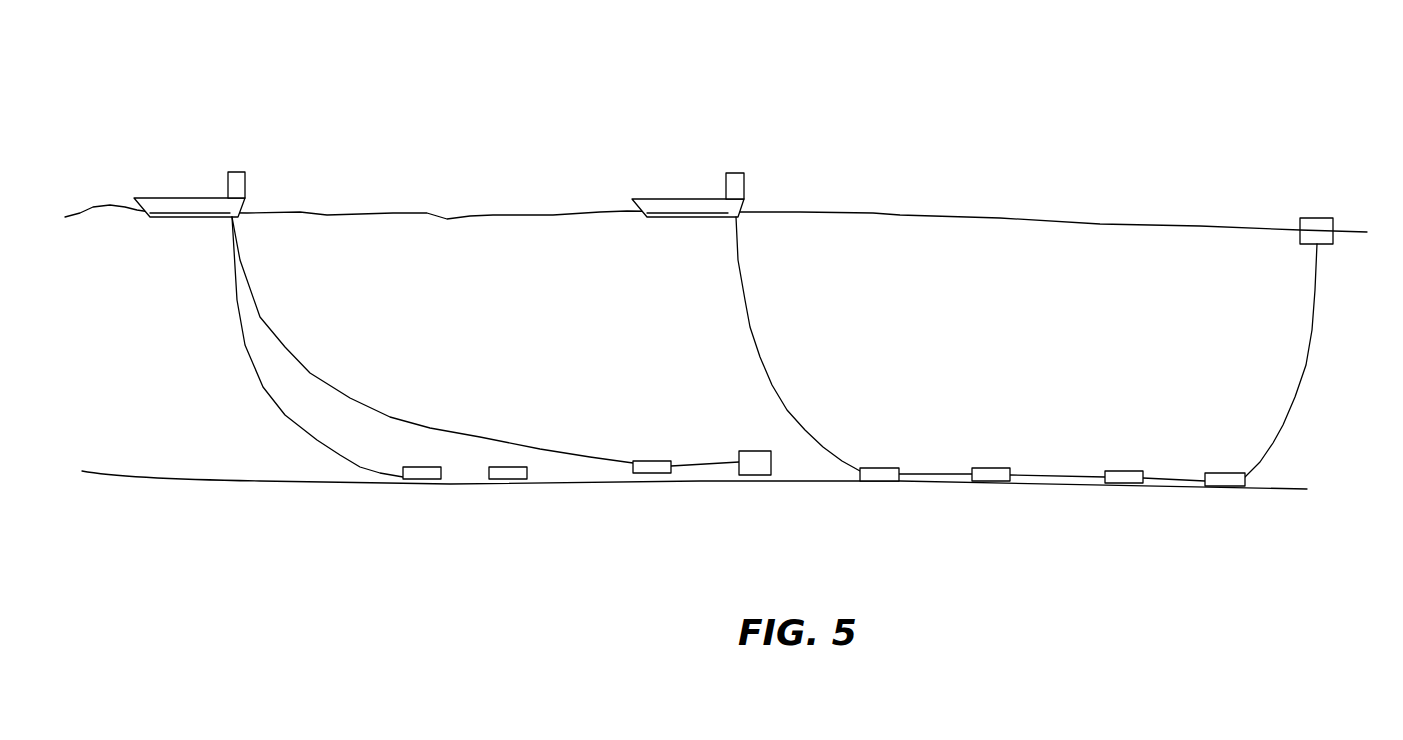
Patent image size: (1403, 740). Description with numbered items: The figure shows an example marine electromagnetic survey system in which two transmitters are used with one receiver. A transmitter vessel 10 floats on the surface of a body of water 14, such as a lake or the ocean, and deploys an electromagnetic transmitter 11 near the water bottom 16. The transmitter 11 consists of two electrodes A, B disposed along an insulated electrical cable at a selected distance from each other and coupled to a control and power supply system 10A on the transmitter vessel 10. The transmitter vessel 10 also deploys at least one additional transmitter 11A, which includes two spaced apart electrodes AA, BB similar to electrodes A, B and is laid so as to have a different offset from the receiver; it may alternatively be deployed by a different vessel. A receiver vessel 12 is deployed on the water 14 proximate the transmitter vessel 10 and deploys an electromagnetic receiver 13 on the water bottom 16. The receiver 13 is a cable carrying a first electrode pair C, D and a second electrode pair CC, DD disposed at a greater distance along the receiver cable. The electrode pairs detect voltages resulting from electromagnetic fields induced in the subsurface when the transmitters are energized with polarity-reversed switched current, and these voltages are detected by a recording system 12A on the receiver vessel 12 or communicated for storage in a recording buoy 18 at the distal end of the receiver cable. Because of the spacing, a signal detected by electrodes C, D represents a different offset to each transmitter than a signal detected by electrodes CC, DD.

The transmitter vessel 10 is at (190, 197).
The control and power supply system 10A is at (245, 188).
The electromagnetic transmitter 11 is at (260, 388).
The additional transmitter 11A is at (390, 418).
The receiver vessel 12 is at (680, 197).
The recording system 12A is at (744, 188).
The electromagnetic receiver 13 is at (760, 353).
The body of water 14 is at (1256, 228).
The water bottom 16 is at (268, 483).
The recording buoy 18 is at (1315, 217).
The transmitter electrode A is at (422, 482).
The transmitter electrode B is at (507, 482).
The additional transmitter electrode AA is at (650, 480).
The additional transmitter electrode BB is at (755, 480).
The receiver electrode C is at (880, 482).
The receiver electrode D is at (992, 481).
The second receiver electrode CC is at (1122, 483).
The second receiver electrode DD is at (1220, 488).